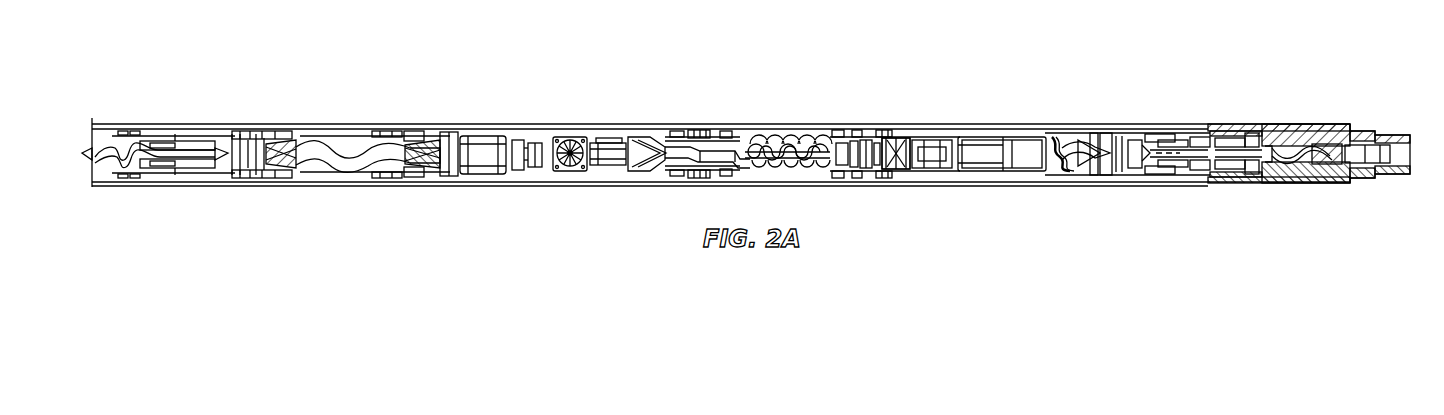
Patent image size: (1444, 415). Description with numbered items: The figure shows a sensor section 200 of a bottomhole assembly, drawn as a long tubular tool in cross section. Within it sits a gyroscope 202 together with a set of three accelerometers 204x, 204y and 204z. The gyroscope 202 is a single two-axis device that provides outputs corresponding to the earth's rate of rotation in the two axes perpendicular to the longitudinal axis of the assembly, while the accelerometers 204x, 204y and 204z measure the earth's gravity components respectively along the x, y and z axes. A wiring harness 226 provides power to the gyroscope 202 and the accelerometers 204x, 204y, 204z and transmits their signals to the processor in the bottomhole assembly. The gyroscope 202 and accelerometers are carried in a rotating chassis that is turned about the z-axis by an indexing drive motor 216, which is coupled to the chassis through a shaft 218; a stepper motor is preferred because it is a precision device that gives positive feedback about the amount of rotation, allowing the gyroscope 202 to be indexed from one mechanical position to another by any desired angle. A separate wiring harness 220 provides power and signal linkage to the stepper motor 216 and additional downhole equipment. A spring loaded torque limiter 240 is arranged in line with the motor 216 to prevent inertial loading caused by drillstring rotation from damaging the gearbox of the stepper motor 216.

The sensor section 200 is at (1080, 101).
The wiring harness 226 is at (349, 131).
The gyroscope 202 is at (458, 132).
The accelerometer 204x is at (578, 179).
The accelerometer 204y is at (535, 130).
The accelerometer 204z is at (493, 180).
The shaft 218 is at (697, 129).
The wiring harness 220 is at (776, 128).
The spring loaded torque limiter 240 is at (868, 129).
The indexing drive motor 216 is at (996, 130).